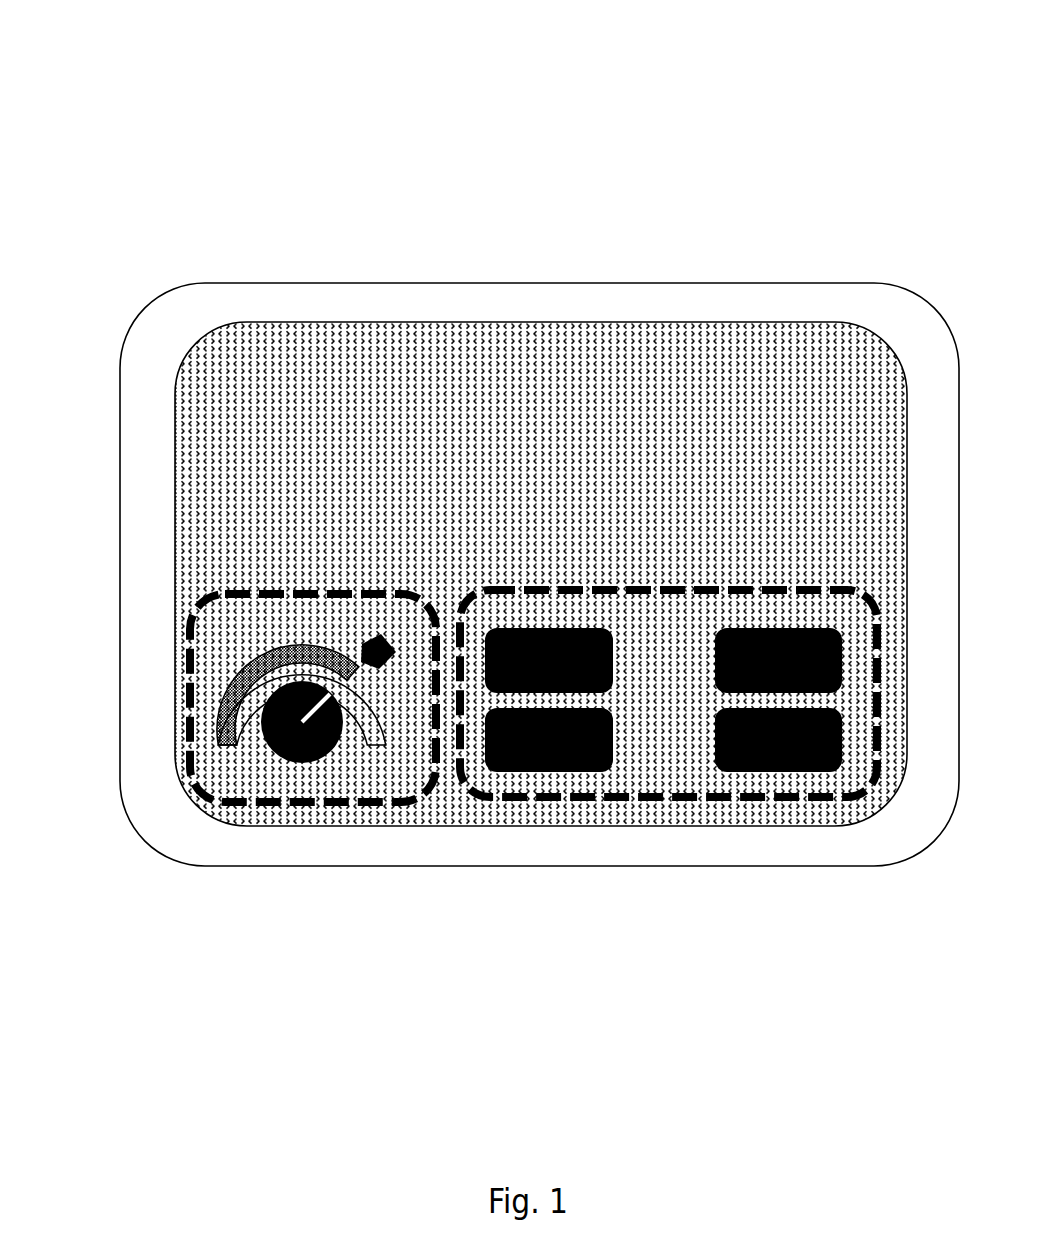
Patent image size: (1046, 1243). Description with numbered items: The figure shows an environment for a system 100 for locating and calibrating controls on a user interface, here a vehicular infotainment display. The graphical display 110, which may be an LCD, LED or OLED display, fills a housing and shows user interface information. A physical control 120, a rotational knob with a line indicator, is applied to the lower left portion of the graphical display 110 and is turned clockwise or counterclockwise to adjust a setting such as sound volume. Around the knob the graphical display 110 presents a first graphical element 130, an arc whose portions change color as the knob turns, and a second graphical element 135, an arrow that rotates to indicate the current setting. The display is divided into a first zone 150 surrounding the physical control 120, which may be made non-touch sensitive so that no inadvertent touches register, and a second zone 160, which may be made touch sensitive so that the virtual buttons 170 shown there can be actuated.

The system 100 is at (563, 38).
The graphical display 110 is at (538, 827).
The physical control 120 is at (256, 768).
The first graphical element 130 is at (210, 703).
The second graphical element 135 is at (360, 641).
The first zone 150 is at (378, 586).
The second zone 160 is at (513, 584).
The virtual buttons 170 is at (599, 620).